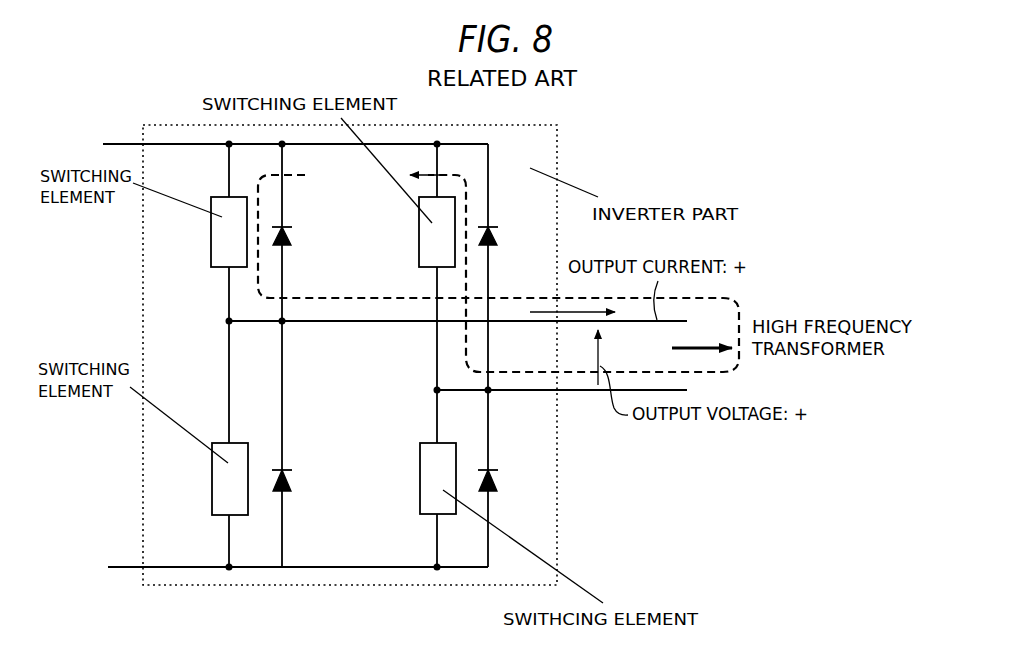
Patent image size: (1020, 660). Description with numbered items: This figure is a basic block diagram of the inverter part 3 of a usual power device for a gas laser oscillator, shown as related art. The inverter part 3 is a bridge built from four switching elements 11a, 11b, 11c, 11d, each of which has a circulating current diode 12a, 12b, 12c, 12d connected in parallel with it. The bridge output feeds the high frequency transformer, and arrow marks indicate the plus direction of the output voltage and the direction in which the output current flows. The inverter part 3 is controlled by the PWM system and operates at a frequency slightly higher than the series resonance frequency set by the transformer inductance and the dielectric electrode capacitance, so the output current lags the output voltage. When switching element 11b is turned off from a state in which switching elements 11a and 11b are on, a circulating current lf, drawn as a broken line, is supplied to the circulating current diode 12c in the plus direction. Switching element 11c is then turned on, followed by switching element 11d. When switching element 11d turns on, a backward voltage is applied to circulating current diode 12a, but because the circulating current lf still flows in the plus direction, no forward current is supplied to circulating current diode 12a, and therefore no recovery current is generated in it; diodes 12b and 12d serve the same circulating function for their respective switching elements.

The inverter part 3 is at (557, 161).
The switching element 11a is at (211, 233).
The switching element 11b is at (420, 480).
The switching element 11c is at (419, 233).
The switching element 11d is at (212, 480).
The circulating current diode 12a is at (293, 236).
The circulating current diode 12b is at (499, 481).
The circulating current diode 12c is at (499, 236).
The circulating current diode 12d is at (293, 481).
The circulating current lf is at (737, 310).